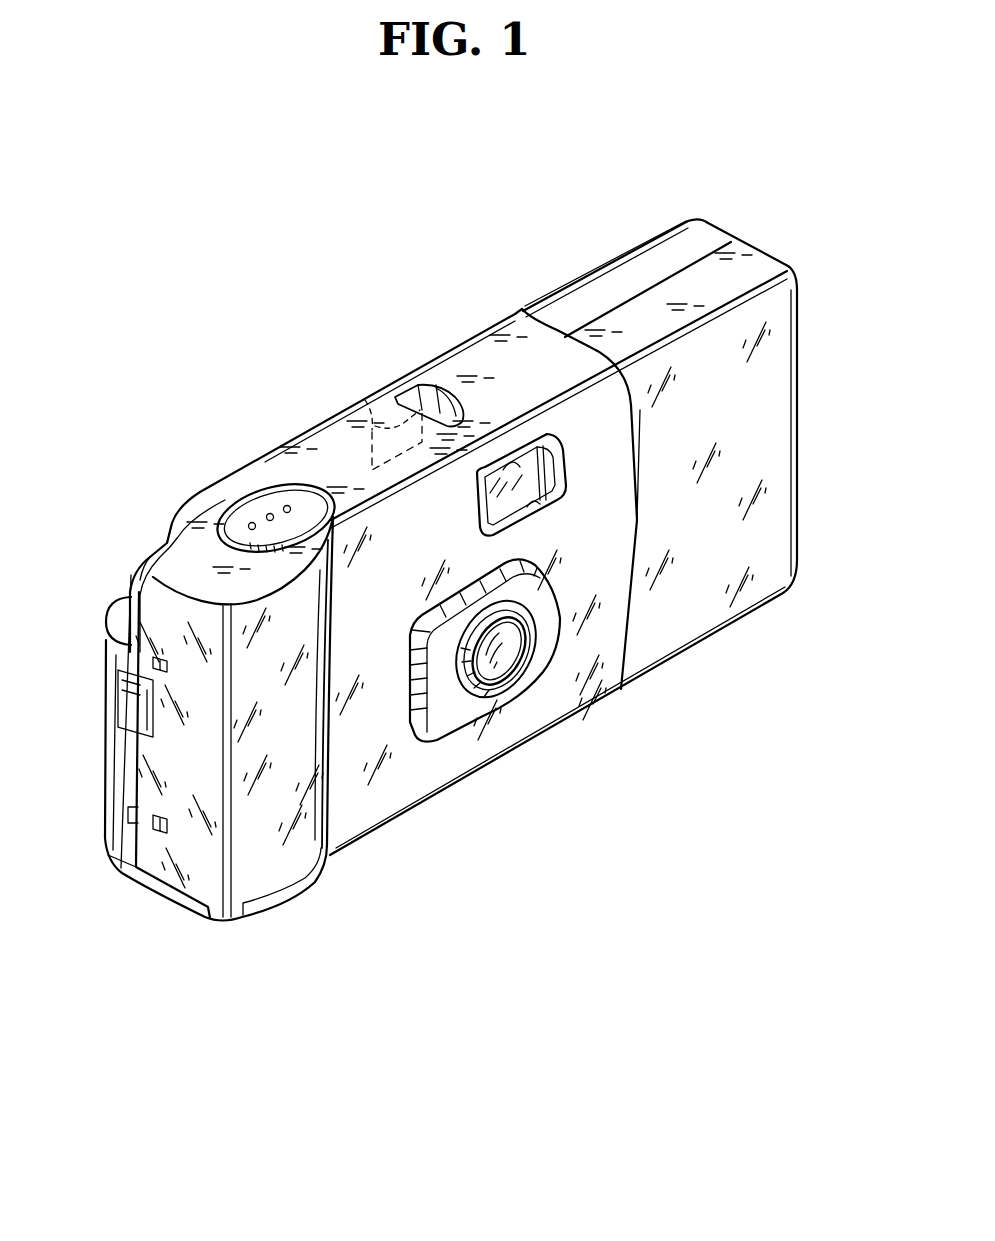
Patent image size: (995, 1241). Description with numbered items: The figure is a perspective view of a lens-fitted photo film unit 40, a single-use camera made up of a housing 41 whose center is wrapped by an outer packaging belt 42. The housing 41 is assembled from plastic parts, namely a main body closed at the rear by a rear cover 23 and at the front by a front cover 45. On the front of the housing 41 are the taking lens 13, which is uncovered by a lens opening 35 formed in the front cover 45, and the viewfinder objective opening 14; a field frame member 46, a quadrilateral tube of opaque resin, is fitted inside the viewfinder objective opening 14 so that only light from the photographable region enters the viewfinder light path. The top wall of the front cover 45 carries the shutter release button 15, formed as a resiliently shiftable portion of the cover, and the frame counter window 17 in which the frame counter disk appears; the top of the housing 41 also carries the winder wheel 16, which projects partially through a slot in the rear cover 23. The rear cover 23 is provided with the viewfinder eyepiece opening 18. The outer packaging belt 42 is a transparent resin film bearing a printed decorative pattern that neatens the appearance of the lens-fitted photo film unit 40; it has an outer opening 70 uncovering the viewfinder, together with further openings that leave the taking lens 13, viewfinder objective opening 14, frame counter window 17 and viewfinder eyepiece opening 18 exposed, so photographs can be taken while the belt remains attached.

The taking lens 13 is at (503, 645).
The viewfinder objective opening 14 is at (523, 466).
The shutter release button 15 is at (248, 513).
The winder wheel 16 is at (153, 550).
The frame counter window 17 is at (437, 390).
The viewfinder eyepiece opening 18 is at (365, 400).
The rear cover 23 is at (593, 295).
The lens opening 35 is at (498, 688).
The lens-fitted photo film unit 40 is at (362, 310).
The housing 41 is at (205, 935).
The outer packaging belt 42 is at (403, 797).
The front cover 45 is at (777, 420).
The field frame member 46 is at (563, 490).
The outer opening 70 is at (537, 510).